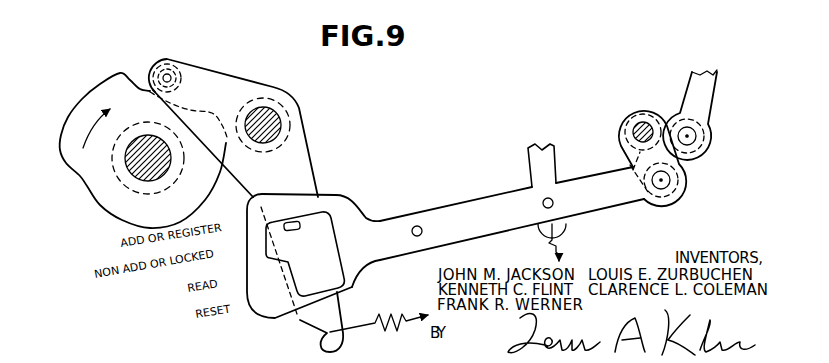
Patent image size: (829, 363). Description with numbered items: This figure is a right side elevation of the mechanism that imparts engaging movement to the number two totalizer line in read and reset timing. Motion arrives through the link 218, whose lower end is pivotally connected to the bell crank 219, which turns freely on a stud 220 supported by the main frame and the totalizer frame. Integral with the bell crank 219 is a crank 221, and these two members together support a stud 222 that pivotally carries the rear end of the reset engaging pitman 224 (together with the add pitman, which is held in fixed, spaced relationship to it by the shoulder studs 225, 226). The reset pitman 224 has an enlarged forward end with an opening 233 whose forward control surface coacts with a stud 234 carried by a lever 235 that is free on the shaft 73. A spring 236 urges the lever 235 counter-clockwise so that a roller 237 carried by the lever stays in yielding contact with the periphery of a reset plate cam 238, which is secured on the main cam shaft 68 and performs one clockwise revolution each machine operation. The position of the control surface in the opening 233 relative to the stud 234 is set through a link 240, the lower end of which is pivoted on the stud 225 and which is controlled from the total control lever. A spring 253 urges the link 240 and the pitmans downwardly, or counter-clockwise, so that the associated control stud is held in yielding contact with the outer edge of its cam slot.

The main cam shaft 68 is at (140, 170).
The shaft 73 is at (272, 112).
The link 218 is at (706, 93).
The bell crank 219 is at (676, 114).
The stud 220 is at (645, 121).
The crank 221 is at (634, 160).
The stud 222 is at (671, 179).
The reset engaging pitman 224 is at (350, 223).
The shoulder stud 225 is at (556, 205).
The shoulder stud 226 is at (415, 226).
The opening 233 is at (314, 212).
The stud 234 is at (292, 220).
The lever 235 is at (300, 141).
The spring 236 is at (380, 315).
The roller 237 is at (160, 64).
The reset plate cam 238 is at (98, 164).
The link 240 is at (529, 163).
The spring 253 is at (565, 240).